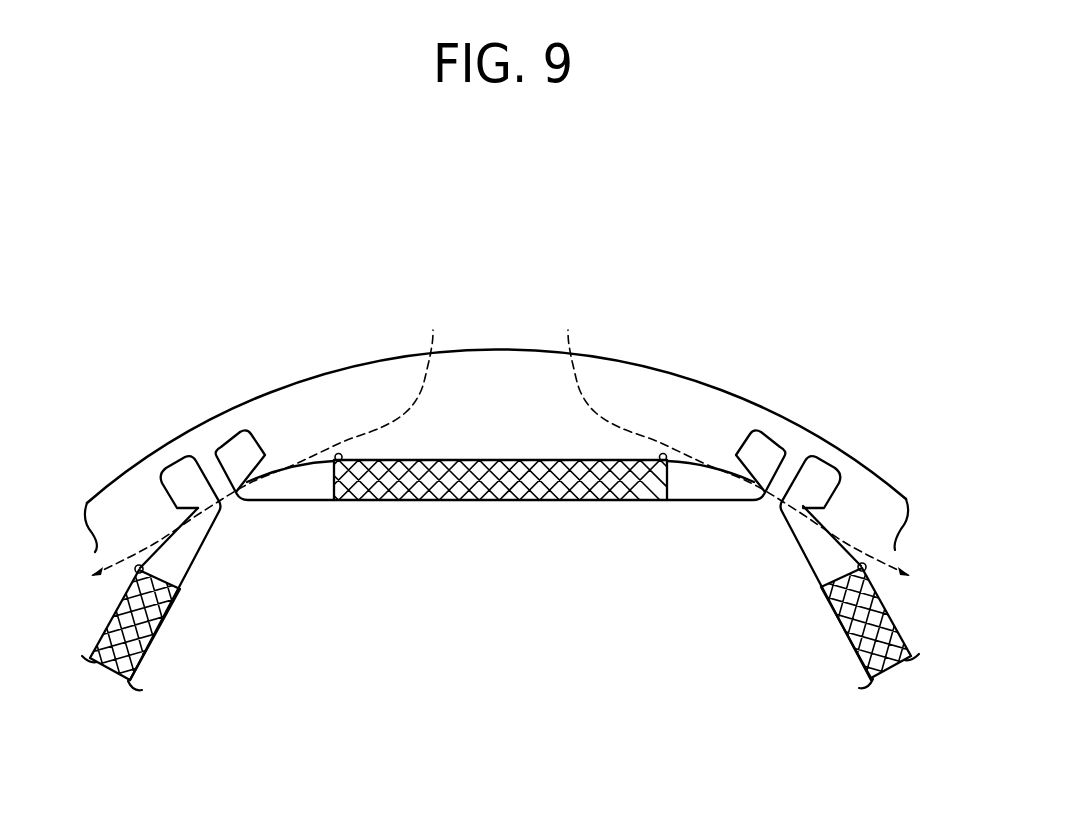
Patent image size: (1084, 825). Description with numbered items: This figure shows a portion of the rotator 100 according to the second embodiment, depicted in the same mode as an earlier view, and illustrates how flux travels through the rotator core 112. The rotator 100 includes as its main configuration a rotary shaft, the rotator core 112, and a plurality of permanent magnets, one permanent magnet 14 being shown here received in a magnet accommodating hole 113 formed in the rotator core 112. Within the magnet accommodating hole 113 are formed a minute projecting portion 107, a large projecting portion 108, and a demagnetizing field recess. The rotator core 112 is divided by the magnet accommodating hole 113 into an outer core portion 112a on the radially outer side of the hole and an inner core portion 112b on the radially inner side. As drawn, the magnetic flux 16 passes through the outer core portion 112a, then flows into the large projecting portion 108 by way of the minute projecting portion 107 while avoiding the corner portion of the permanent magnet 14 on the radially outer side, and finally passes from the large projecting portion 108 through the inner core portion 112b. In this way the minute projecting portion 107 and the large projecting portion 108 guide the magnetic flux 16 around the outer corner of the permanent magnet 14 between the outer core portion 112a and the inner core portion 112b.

The rotator 100 is at (168, 173).
The rotator core 112 is at (278, 389).
The outer core portion 112a is at (495, 405).
The inner core portion 112b is at (493, 523).
The magnet accommodating hole 113 is at (763, 445).
The permanent magnet 14 is at (408, 483).
The magnetic flux 16 is at (418, 398).
The minute projecting portion 107 is at (320, 462).
The large projecting portion 108 is at (262, 478).